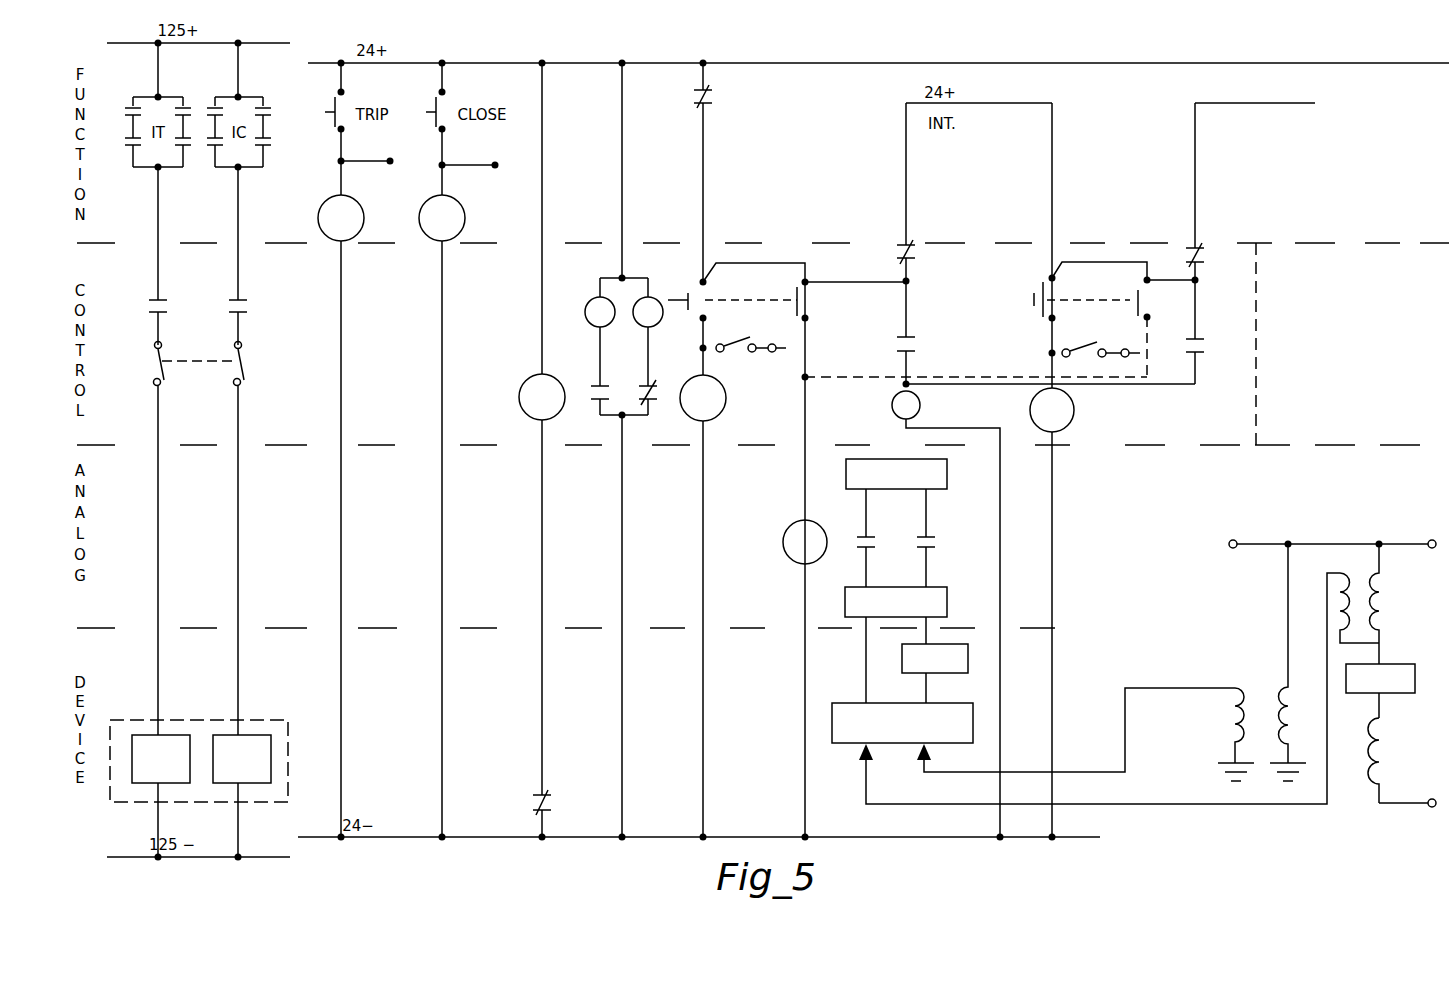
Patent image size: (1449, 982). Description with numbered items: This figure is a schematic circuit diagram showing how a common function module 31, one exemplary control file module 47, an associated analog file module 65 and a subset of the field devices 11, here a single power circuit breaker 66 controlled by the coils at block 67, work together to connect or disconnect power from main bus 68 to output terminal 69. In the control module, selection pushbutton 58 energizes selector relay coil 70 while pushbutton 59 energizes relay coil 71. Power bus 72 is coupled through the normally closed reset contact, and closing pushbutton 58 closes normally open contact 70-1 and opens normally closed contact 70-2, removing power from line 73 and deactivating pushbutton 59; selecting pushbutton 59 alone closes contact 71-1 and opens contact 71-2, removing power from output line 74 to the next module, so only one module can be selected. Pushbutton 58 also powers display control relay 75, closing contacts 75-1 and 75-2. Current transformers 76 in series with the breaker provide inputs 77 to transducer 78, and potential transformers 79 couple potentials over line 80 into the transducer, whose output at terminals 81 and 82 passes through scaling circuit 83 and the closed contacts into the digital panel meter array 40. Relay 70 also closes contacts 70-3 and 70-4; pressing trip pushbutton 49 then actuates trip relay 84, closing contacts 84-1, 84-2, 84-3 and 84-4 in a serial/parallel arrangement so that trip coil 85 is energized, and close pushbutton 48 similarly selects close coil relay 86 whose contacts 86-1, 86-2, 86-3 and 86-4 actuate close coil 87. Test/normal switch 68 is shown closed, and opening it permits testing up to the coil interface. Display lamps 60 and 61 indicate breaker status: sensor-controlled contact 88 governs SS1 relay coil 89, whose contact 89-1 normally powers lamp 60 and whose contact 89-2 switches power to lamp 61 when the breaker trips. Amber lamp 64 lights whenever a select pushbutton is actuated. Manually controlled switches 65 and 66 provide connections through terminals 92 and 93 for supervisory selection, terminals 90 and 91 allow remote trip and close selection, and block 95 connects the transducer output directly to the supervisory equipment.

The field devices 11 is at (140, 652).
The common function module 31 is at (140, 226).
The digital panel meter array 40 is at (850, 478).
The control file module 47 is at (140, 266).
The close pushbutton 48 is at (452, 98).
The trip pushbutton 49 is at (346, 98).
The selection pushbutton 58 is at (670, 300).
The selection pushbutton 59 is at (1034, 298).
The display lamp 60 is at (644, 327).
The display lamp 61 is at (590, 300).
The amber lamp 64 is at (892, 405).
The analog file module 65 is at (146, 466).
The power circuit breaker 66 is at (1078, 358).
The control coils 67 is at (270, 800).
The main bus 68 is at (199, 363).
The output terminal 69 is at (1431, 800).
The selector relay coil 70 is at (726, 399).
The normally open contact 70-1 is at (896, 345).
The normally closed contact 70-2 is at (898, 252).
The normally open contact 70-3 is at (160, 303).
The normally open contact 70-4 is at (248, 312).
The relay coil 71 is at (1075, 414).
The normally open contact 71-1 is at (1205, 352).
The normally closed contact 71-2 is at (1205, 258).
The power bus 72 is at (810, 64).
The line 73 is at (1052, 141).
The output line 74 is at (1195, 156).
The display control relay 75 is at (784, 548).
The contact 75-1 is at (857, 538).
The contact 75-2 is at (940, 548).
The current transformers 76 is at (1388, 590).
The inputs 77 is at (1180, 804).
The transducer 78 is at (838, 742).
The potential transformers 79 is at (1228, 722).
The line 80 is at (1142, 688).
The output terminal 81 is at (866, 652).
The output terminal 82 is at (926, 689).
The scaling circuit 83 is at (946, 590).
The trip relay 84 is at (357, 240).
The normally open contact 84-1 is at (130, 107).
The normally open contact 84-2 is at (128, 147).
The normally open contact 84-3 is at (178, 106).
The normally open contact 84-4 is at (188, 150).
The power circuit breaker trip coil 85 is at (170, 735).
The close coil relay 86 is at (466, 218).
The normally open IC relay contact 86-1 is at (212, 108).
The normally open IC relay contact 86-2 is at (213, 148).
The normally open IC relay contact 86-3 is at (268, 112).
The normally open IC relay contact 86-4 is at (268, 148).
The power circuit breaker close coil 87 is at (253, 735).
The normally closed contact 88 is at (533, 801).
The SS1 relay coil 89 is at (520, 396).
The normally closed contact 89-1 is at (662, 402).
The normally open contact 89-2 is at (592, 402).
The terminal 90 is at (400, 162).
The terminal 91 is at (496, 162).
The terminal 92 is at (786, 347).
The terminal 93 is at (1140, 353).
The supervisory connections block 95 is at (963, 646).